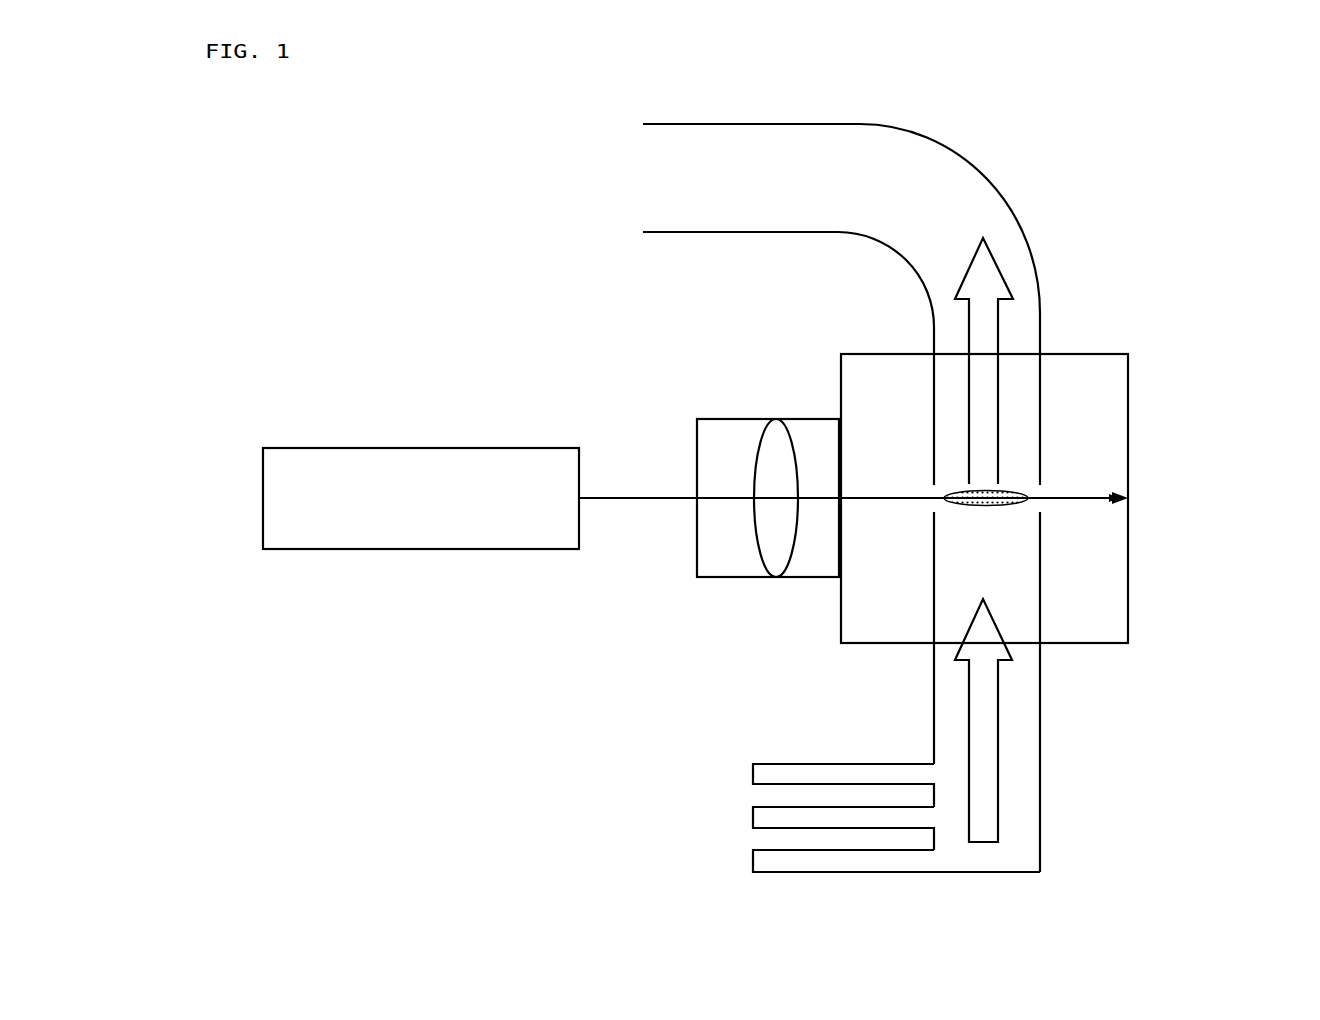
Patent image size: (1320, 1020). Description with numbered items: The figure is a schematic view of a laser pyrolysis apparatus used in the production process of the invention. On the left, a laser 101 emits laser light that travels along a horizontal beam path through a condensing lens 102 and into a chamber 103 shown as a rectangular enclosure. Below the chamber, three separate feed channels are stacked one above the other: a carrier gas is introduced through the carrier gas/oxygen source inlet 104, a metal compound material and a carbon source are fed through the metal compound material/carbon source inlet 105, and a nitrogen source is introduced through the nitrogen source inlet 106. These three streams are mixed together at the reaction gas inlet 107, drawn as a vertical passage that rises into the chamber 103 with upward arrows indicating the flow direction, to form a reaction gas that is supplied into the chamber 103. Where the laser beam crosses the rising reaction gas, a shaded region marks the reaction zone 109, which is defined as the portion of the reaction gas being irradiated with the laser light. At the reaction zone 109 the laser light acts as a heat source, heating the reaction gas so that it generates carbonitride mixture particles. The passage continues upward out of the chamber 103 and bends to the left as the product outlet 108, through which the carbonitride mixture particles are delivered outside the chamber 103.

The laser 101 is at (421, 526).
The condensing lens 102 is at (768, 526).
The chamber 103 is at (984, 497).
The carrier gas/oxygen source inlet 104 is at (745, 772).
The metal compound material/carbon source inlet 105 is at (745, 817).
The nitrogen source inlet 106 is at (745, 860).
The reaction gas inlet 107 is at (1028, 763).
The product outlet 108 is at (841, 225).
The reaction zone 109 is at (1036, 481).